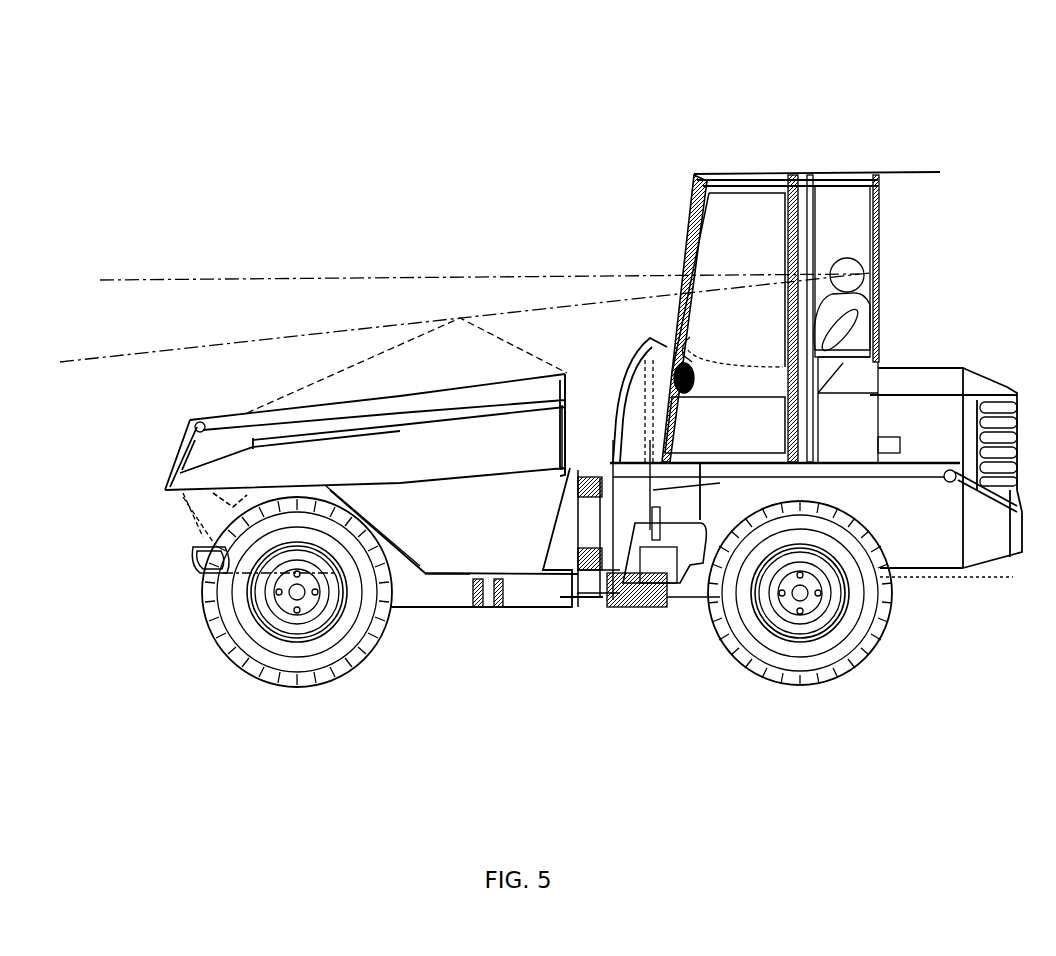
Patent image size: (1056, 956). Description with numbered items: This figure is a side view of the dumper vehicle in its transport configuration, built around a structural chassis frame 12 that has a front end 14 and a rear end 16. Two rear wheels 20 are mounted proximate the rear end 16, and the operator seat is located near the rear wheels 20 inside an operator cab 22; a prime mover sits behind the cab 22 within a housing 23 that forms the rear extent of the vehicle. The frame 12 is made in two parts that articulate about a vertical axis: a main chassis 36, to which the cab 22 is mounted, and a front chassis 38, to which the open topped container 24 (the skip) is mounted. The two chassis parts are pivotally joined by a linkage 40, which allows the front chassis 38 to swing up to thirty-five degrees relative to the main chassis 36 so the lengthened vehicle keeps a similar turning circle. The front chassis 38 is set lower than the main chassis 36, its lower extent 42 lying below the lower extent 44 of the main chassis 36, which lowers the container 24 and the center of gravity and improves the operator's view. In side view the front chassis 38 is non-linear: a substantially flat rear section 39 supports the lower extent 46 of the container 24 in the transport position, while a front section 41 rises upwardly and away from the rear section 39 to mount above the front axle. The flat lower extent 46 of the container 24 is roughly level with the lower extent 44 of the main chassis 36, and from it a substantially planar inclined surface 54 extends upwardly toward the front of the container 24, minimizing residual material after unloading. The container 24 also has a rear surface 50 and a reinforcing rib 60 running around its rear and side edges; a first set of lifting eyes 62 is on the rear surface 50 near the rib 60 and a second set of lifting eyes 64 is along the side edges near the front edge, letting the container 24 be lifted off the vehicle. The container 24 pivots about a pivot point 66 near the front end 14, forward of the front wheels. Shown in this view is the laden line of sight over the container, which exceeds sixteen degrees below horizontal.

The structural chassis frame 12 is at (727, 714).
The front end 14 is at (193, 562).
The rear end 16 is at (1012, 585).
The rear wheels 20 is at (738, 632).
The operator cab 22 is at (828, 212).
The housing 23 is at (928, 424).
The open topped container 24 is at (362, 447).
The main chassis 36 is at (940, 548).
The front chassis 38 is at (425, 593).
The rear section 39 is at (540, 607).
The linkage 40 is at (592, 483).
The front section 41 is at (243, 557).
The lower extent of the front chassis 42 is at (410, 593).
The lower extent of the main chassis 44 is at (913, 620).
The lower extent of the container 46 is at (450, 573).
The rear surface 50 is at (568, 442).
The inclined surface 54 is at (373, 530).
The reinforcing rib 60 is at (405, 410).
The first set of lifting eyes 62 is at (570, 407).
The second set of lifting eyes 64 is at (208, 427).
The pivot point 66 is at (303, 583).